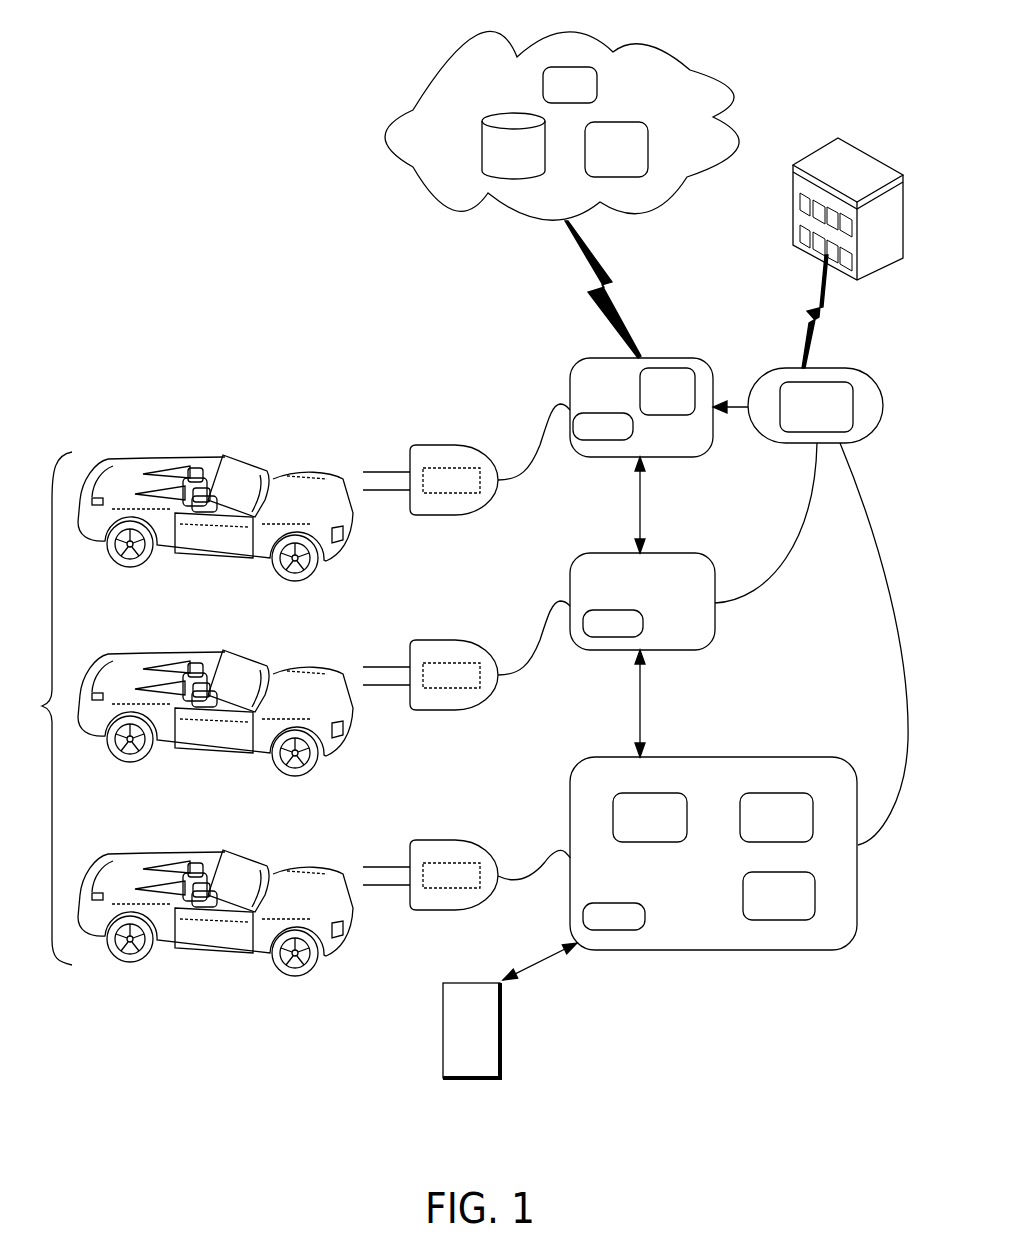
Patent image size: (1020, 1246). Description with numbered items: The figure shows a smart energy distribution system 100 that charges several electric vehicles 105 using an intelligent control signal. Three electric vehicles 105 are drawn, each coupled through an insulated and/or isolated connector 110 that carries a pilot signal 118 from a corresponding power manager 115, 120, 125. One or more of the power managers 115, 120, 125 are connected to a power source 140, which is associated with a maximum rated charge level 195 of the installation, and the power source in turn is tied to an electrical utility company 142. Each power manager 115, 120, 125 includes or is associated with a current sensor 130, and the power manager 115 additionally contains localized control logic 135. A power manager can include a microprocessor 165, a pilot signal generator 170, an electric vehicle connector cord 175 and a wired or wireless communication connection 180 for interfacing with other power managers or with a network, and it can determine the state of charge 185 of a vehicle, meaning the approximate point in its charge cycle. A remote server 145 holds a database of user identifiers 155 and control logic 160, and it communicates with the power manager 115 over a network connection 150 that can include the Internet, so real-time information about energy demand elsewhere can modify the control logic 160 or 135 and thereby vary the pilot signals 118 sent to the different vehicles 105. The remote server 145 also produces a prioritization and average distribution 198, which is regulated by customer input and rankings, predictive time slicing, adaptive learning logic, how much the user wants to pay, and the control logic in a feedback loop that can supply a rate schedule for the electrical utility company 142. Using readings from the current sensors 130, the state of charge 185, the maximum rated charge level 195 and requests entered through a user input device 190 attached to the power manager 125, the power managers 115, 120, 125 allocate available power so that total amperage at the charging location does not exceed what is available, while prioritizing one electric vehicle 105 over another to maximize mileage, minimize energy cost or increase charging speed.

The smart energy distribution system 100 is at (205, 250).
The electric vehicles 105 is at (179, 714).
The insulated and/or isolated connectors 110 is at (470, 515).
The power manager 115 is at (700, 452).
The pilot signal 118 is at (451, 678).
The power manager 120 is at (703, 648).
The power manager 125 is at (840, 950).
The current sensor 130 is at (609, 671).
The control logic 135 is at (667, 391).
The power source 140 is at (820, 368).
The electrical utility company 142 is at (848, 142).
The remote server 145 is at (437, 210).
The network connection 150 is at (610, 288).
The database of user identifiers 155 is at (513, 146).
The control logic 160 is at (616, 149).
The microprocessor 165 is at (650, 817).
The pilot signal generator 170 is at (776, 817).
The electric vehicle connector cord 175 is at (543, 858).
The wired or wireless communication connection 180 is at (640, 690).
The state of charge 185 is at (779, 896).
The user input device 190 is at (471, 1030).
The maximum rated charge level 195 is at (816, 407).
The prioritization and average distribution 198 is at (570, 85).